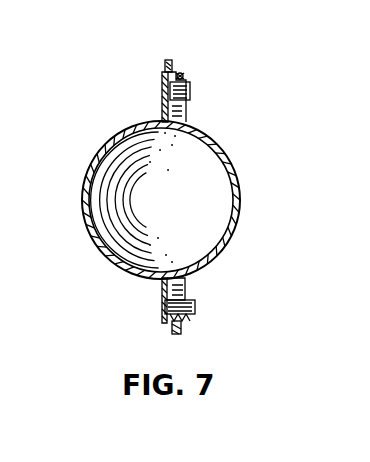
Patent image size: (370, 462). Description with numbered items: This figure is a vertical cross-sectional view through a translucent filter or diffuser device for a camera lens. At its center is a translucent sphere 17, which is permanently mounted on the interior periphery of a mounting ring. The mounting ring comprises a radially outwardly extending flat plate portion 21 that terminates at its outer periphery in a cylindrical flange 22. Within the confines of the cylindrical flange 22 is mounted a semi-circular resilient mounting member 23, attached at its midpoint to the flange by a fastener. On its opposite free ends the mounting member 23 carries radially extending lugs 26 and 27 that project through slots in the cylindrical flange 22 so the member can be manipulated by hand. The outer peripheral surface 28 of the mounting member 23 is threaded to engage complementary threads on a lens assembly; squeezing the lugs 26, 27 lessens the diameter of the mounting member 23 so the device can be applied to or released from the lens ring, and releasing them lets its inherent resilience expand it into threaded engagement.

The translucent sphere 17 is at (240, 176).
The flat plate portion 21 is at (162, 298).
The cylindrical flange 22 is at (183, 73).
The resilient mounting member 23 is at (180, 95).
The lug 26 is at (168, 60).
The lug 27 is at (178, 333).
The outer peripheral surface 28 is at (190, 82).